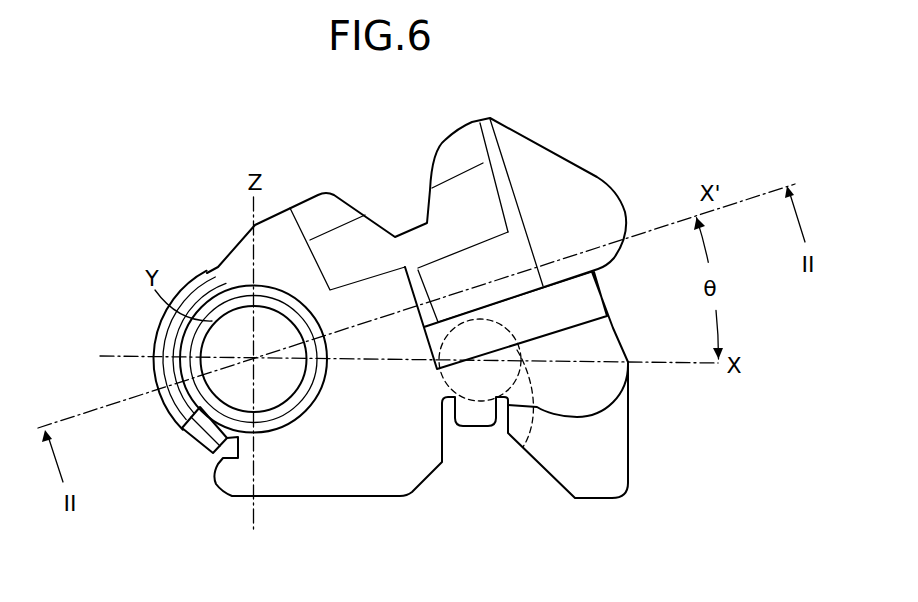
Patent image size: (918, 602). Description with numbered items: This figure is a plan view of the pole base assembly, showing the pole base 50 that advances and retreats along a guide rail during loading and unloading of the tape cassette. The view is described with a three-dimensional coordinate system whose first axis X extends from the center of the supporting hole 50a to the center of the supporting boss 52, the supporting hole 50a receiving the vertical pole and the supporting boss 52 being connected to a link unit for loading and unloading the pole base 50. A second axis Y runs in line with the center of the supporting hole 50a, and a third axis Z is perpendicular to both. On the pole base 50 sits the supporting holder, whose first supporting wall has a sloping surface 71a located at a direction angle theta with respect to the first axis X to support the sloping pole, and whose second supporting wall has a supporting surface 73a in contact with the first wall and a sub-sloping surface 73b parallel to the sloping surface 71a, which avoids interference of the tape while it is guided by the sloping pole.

The pole base 50 is at (386, 498).
The supporting hole 50a is at (190, 437).
The supporting boss 52 is at (523, 447).
The sloping surface 71a is at (448, 273).
The supporting surface 73a is at (479, 287).
The sub-sloping surface 73b is at (562, 298).